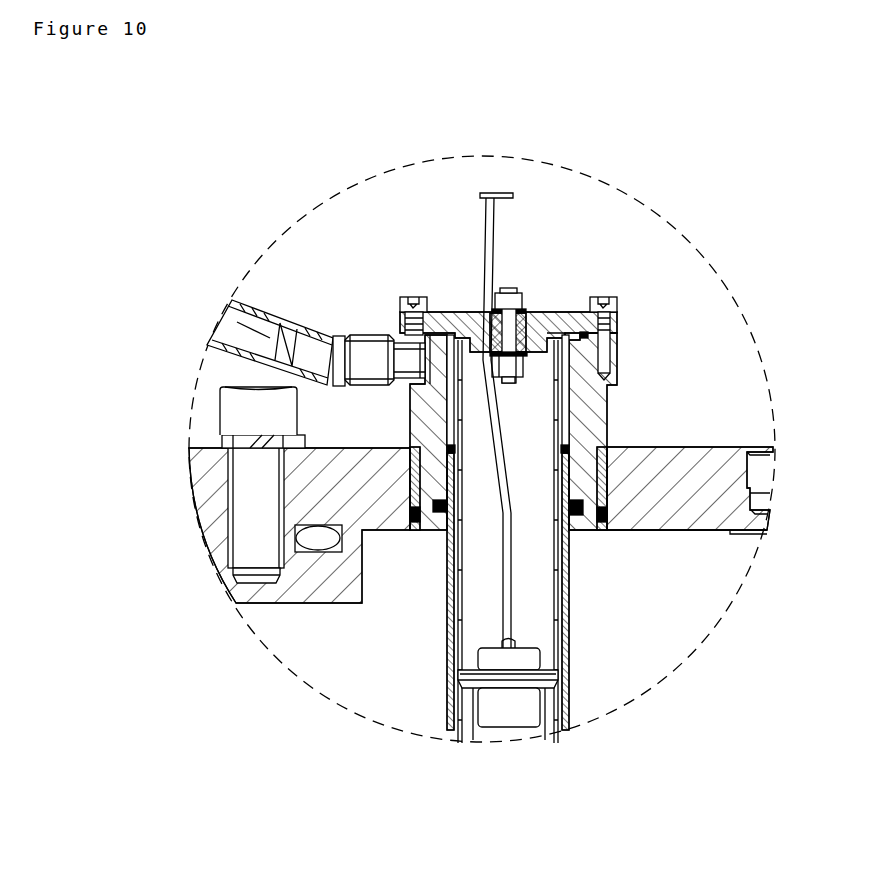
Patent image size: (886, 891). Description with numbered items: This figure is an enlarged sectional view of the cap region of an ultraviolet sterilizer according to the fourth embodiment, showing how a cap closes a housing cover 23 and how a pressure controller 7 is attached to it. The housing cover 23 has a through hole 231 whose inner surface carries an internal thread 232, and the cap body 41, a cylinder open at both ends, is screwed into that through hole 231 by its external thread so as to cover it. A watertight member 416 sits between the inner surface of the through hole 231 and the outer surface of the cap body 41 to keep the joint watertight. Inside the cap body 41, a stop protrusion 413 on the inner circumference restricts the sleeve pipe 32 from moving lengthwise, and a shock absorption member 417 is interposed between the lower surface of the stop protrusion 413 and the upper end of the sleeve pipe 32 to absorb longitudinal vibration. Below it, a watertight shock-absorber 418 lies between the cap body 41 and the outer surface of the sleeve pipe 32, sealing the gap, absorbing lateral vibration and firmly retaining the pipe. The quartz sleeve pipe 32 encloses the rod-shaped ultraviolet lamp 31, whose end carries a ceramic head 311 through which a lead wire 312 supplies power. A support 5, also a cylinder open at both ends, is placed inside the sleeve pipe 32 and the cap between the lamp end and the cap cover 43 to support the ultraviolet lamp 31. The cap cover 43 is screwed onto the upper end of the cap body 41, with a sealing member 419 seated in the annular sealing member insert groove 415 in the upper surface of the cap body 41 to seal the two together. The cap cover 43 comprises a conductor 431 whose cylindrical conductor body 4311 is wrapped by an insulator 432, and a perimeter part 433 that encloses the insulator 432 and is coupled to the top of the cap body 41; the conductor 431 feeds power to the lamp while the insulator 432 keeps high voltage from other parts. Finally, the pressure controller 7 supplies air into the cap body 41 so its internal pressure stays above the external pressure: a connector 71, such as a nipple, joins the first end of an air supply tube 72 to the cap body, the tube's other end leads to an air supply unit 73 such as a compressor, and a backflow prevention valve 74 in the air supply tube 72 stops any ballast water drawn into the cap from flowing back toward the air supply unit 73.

The support 5 is at (543, 312).
The pressure controller 7 is at (219, 237).
The connector 71 is at (347, 335).
The air supply tube 72 is at (293, 313).
The air supply unit 73 is at (215, 343).
The backflow prevention valve 74 is at (228, 312).
The housing cover 23 is at (705, 467).
The through hole 231 is at (600, 563).
The internal thread 232 is at (607, 490).
The ultraviolet lamp 31 is at (487, 778).
The head 311 is at (510, 677).
The lead wire 312 is at (503, 600).
The sleeve pipe 32 is at (568, 698).
The cap body 41 is at (607, 400).
The stop protrusion 413 is at (222, 386).
The sealing member insert groove 415 is at (368, 342).
The watertight member 416 is at (608, 520).
The shock absorption member 417 is at (410, 442).
The watertight shock-absorber 418 is at (410, 487).
The sealing member 419 is at (430, 330).
The cap cover 43 is at (524, 238).
The conductor 431 is at (508, 288).
The conductor body 4311 is at (543, 300).
The insulator 432 is at (492, 310).
The perimeter part 433 is at (482, 311).